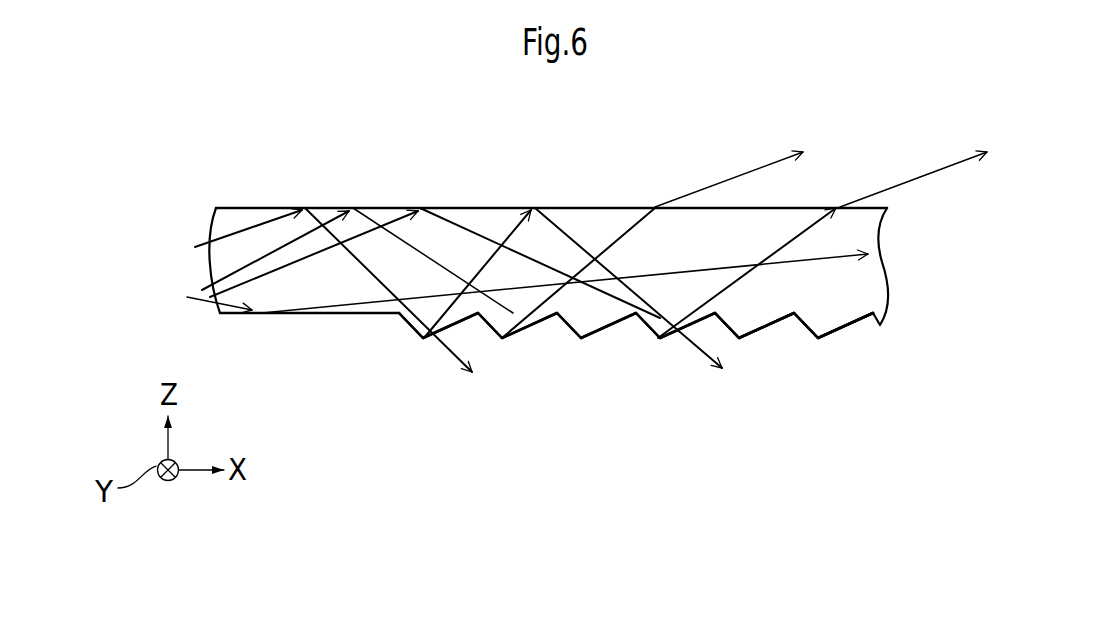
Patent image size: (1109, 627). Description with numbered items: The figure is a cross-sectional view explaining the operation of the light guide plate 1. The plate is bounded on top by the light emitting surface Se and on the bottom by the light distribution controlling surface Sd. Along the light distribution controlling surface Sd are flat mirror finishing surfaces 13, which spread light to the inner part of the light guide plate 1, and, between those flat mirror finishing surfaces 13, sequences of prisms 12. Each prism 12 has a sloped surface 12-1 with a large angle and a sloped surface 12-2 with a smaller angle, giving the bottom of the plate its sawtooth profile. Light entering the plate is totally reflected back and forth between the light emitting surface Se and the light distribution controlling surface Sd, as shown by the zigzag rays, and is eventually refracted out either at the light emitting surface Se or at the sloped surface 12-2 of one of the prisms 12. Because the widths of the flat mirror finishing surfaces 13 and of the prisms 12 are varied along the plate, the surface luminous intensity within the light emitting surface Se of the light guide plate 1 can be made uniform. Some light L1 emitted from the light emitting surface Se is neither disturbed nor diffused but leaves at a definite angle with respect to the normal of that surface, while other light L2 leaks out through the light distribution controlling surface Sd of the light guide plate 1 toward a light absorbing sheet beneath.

The light guide plate 1 is at (350, 163).
The prisms 12 is at (715, 502).
The sloped surface 12-1 is at (405, 320).
The sloped surface 12-2 is at (436, 333).
The flat mirror finishing surfaces 13 is at (316, 317).
The light emitting surface Se is at (512, 198).
The light distribution controlling surface Sd is at (772, 332).
The light L1 is at (1005, 150).
The light L2 is at (735, 375).